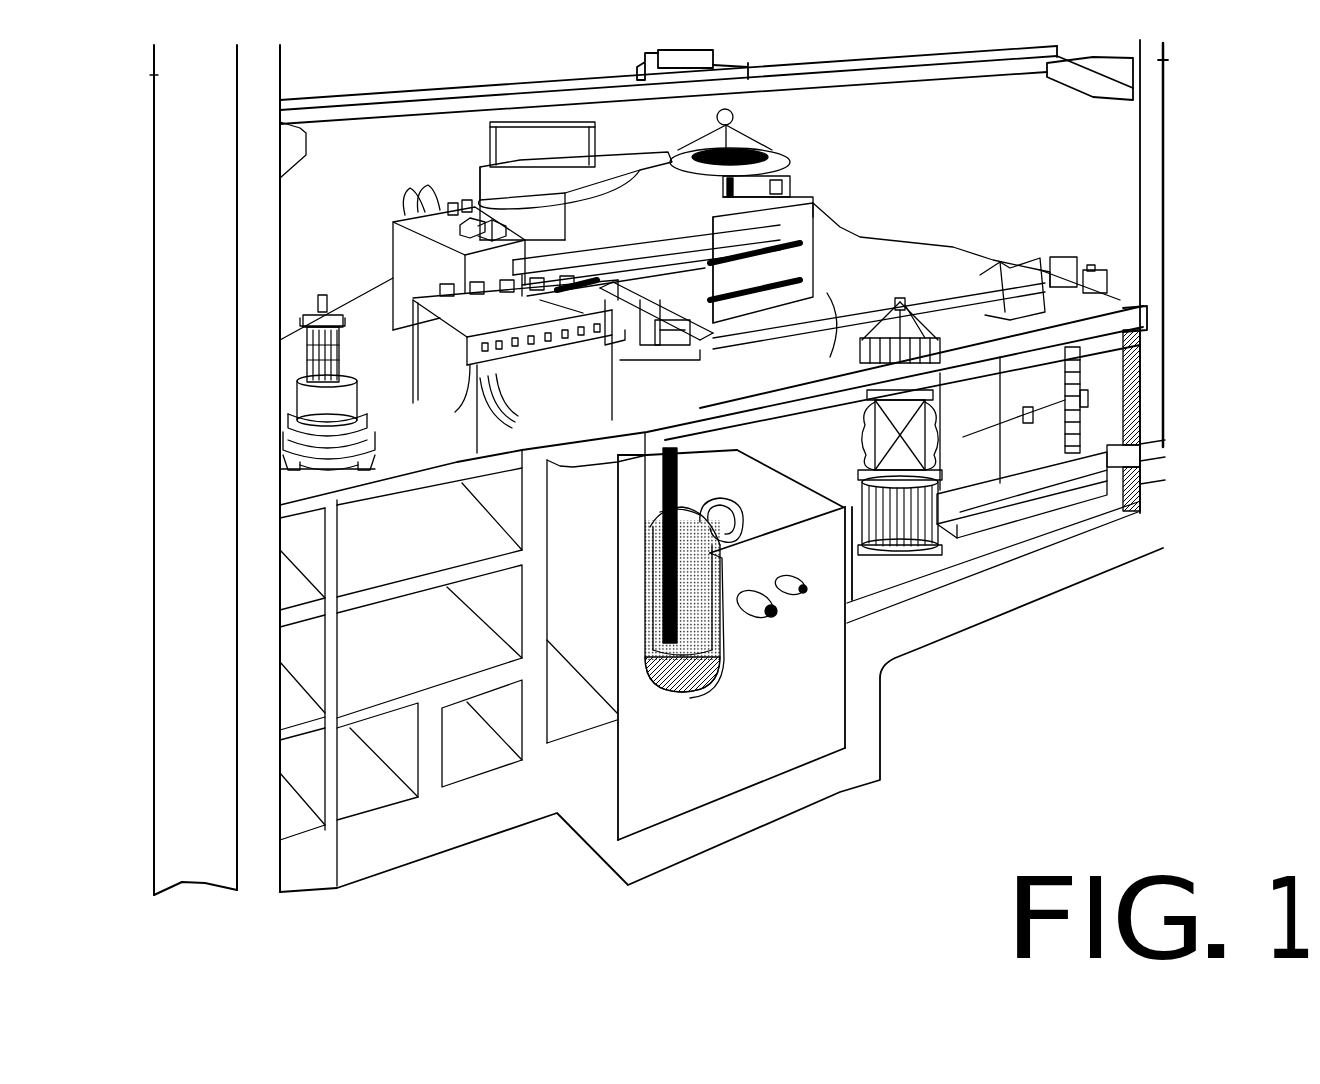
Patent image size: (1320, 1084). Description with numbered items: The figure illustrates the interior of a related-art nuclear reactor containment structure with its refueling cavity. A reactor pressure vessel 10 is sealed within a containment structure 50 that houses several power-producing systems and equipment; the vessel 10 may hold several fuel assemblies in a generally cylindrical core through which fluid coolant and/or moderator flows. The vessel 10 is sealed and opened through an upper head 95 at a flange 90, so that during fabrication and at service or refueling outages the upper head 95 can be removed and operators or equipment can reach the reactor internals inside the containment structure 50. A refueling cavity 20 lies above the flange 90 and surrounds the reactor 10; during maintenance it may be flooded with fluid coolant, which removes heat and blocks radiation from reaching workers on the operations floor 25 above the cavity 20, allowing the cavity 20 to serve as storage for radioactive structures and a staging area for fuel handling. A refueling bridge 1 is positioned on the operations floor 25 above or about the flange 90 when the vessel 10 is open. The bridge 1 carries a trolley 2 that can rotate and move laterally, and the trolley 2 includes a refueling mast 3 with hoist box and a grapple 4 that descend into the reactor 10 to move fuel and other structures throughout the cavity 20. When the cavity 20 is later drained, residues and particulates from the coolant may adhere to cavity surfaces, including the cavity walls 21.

The containment structure 50 is at (195, 140).
The upper head 95 is at (332, 410).
The refueling bridge 1 is at (650, 297).
The trolley 2 is at (735, 366).
The cavity walls 21 is at (898, 318).
The operations floor 25 is at (987, 307).
The refueling mast 3 is at (662, 487).
The flange 90 is at (713, 513).
The grapple 4 is at (700, 617).
The reactor pressure vessel 10 is at (663, 707).
The refueling cavity 20 is at (880, 567).